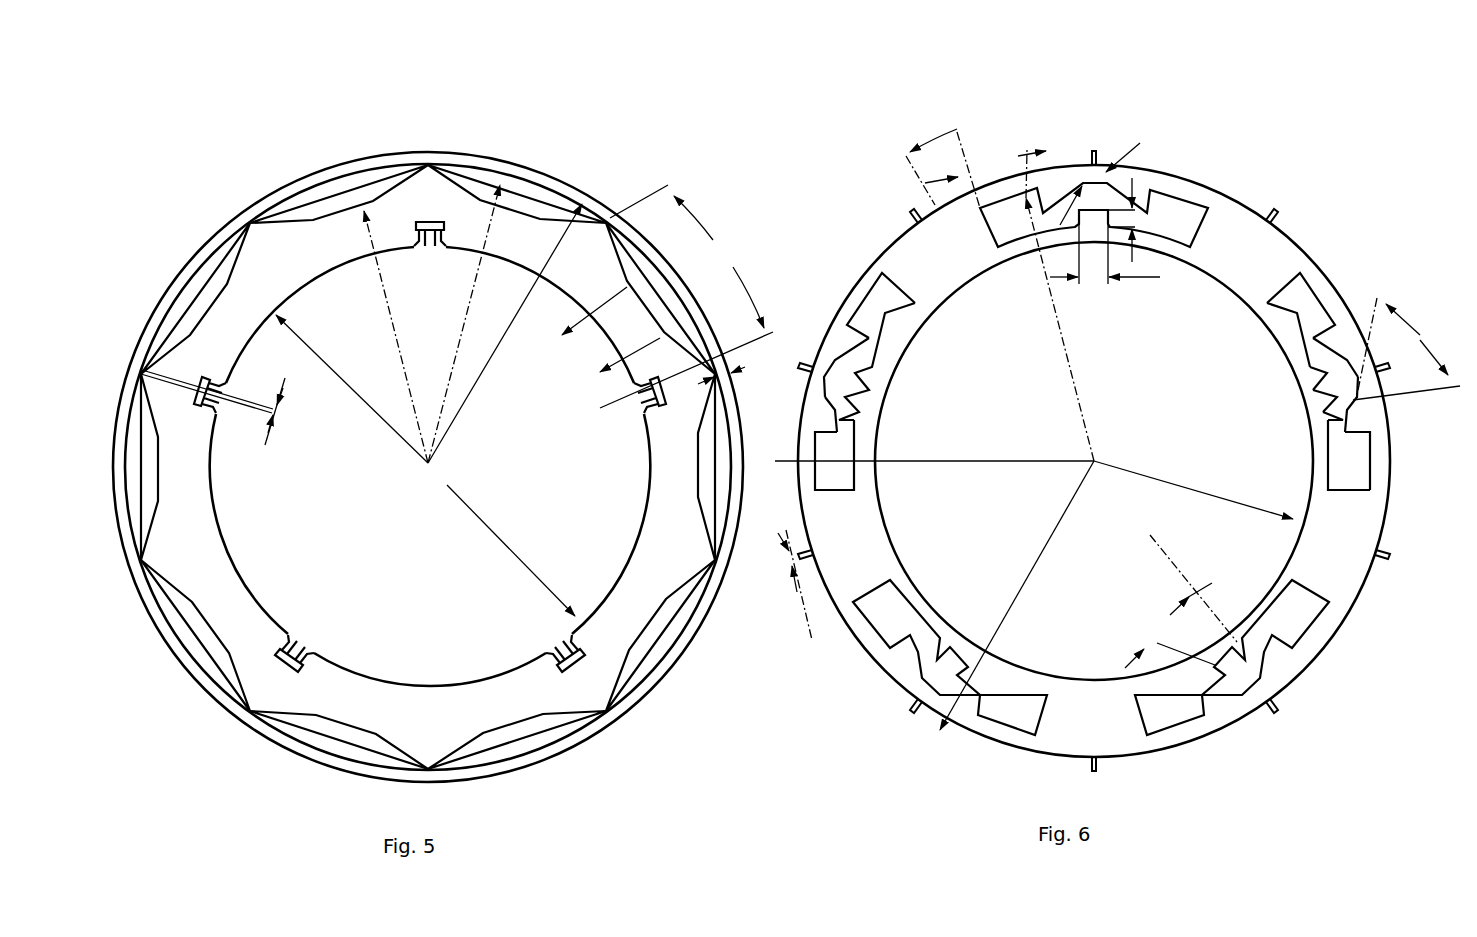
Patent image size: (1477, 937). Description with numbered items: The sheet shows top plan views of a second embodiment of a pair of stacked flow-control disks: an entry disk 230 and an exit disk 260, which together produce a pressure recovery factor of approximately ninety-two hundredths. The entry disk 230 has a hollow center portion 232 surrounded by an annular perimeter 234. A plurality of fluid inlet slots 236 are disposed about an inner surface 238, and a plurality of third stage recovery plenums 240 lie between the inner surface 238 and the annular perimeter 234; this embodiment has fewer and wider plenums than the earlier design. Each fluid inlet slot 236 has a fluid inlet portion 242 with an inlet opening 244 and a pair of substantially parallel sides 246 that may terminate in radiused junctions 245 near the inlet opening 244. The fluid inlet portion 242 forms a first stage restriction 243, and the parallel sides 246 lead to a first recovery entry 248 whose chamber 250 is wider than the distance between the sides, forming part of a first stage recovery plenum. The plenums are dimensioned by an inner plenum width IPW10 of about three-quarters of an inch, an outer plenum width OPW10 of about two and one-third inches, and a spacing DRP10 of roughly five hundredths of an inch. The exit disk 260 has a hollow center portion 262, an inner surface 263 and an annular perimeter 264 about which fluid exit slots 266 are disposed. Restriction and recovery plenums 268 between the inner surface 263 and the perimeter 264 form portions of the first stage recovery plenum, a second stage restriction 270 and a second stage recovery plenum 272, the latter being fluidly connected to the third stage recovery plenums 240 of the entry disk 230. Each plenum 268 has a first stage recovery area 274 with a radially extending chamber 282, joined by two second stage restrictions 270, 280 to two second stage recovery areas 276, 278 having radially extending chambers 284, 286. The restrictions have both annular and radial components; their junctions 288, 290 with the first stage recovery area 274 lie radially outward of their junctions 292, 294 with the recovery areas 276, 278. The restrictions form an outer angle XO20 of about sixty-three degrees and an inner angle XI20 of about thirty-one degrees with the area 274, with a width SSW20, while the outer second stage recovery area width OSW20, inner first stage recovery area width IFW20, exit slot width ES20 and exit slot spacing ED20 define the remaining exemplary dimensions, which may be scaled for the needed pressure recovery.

In FIG. 5, the entry disk 230 is at (206, 193).
In FIG. 5, the hollow center portion 232 is at (430, 466).
In FIG. 5, the annular perimeter 234 is at (558, 178).
In FIG. 5, the fluid inlet slots 236 is at (298, 648).
In FIG. 5, the inner surface 238 is at (497, 672).
In FIG. 5, the third stage recovery plenums 240 is at (540, 740).
In FIG. 5, the fluid inlet portion 242 is at (553, 633).
In FIG. 5, the first stage restriction 243 is at (430, 238).
In FIG. 5, the inlet opening 244 is at (295, 640).
In FIG. 5, the radiused junctions 245 is at (308, 652).
In FIG. 5, the substantially parallel sides 246 is at (290, 641).
In FIG. 5, the first recovery entry 248 is at (412, 231).
In FIG. 5, the chamber 250 is at (560, 684).
In FIG. 5, the outer plenum width OPW10 is at (727, 243).
In FIG. 5, the inner plenum width IPW10 is at (582, 357).
In FIG. 5, the distance between third stage recovery plenums DRP10 is at (277, 415).
In FIG. 6, the exit disk 260 is at (1233, 178).
In FIG. 6, the hollow center portion 262 is at (1044, 461).
In FIG. 6, the inner surface 263 is at (1078, 677).
In FIG. 6, the annular perimeter 264 is at (1278, 722).
In FIG. 6, the fluid exit slots 266 is at (1180, 762).
In FIG. 6, the restriction and recovery plenums 268 is at (1306, 645).
In FIG. 6, the second stage restriction 270 is at (1312, 352).
In FIG. 6, the second stage recovery plenum 272 is at (1357, 463).
In FIG. 6, the first stage recovery area 274 is at (1337, 393).
In FIG. 6, the second stage recovery area 276 is at (1295, 315).
In FIG. 6, the second stage recovery area 278 is at (1350, 481).
In FIG. 6, the second stage restriction 280 is at (1340, 420).
In FIG. 6, the radially extending chamber 282 is at (833, 367).
In FIG. 6, the radially extending chamber 284 is at (1302, 297).
In FIG. 6, the radially extending chamber 286 is at (1358, 462).
In FIG. 6, the junction 288 is at (848, 367).
In FIG. 6, the junction 290 is at (838, 393).
In FIG. 6, the junction 292 is at (878, 345).
In FIG. 6, the junction 294 is at (848, 432).
In FIG. 6, the outer second stage recovery area width OSW20 is at (1005, 157).
In FIG. 6, the second stage restriction width SSW20 is at (1130, 215).
In FIG. 6, the fluid exit slot width ES20 is at (985, 120).
In FIG. 6, the inner first stage recovery area width IFW20 is at (1093, 273).
In FIG. 6, the outer angle XO20 is at (1406, 349).
In FIG. 6, the distance between fluid exit slots ED20 is at (793, 598).
In FIG. 6, the inner angle XI20 is at (1181, 601).